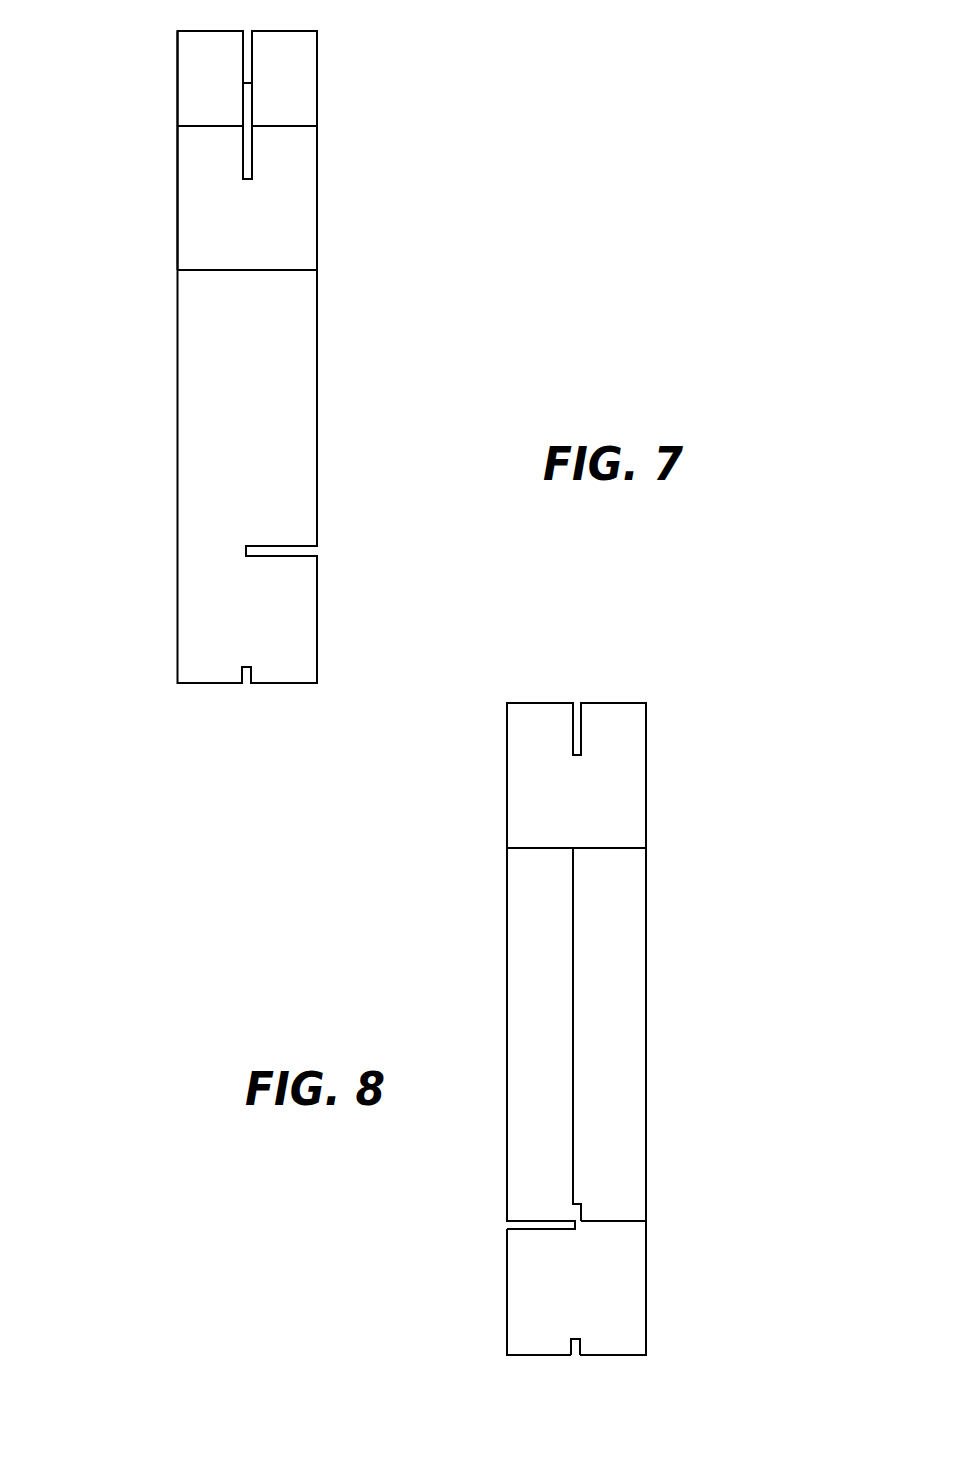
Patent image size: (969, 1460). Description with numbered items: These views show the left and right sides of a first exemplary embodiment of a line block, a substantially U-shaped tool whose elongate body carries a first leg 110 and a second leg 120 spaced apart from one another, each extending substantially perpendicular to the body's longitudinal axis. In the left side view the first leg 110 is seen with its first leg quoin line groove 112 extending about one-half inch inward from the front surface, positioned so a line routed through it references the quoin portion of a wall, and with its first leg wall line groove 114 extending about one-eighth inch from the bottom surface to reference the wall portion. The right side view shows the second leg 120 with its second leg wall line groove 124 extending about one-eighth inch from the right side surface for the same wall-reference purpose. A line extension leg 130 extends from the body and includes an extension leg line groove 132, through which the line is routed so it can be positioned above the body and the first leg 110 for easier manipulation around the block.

In FIG. 7, the first leg 110 is at (177, 430).
In FIG. 7, the first leg quoin line groove 112 is at (283, 545).
In FIG. 8, the first leg quoin line groove 112 is at (542, 1232).
In FIG. 7, the first leg wall line groove 114 is at (242, 685).
In FIG. 8, the first leg wall line groove 114 is at (583, 1337).
In FIG. 8, the second leg 120 is at (647, 948).
In FIG. 8, the second leg wall line groove 124 is at (581, 1005).
In FIG. 7, the line extension leg 130 is at (322, 164).
In FIG. 8, the line extension leg 130 is at (648, 755).
In FIG. 7, the extension leg line groove 132 is at (242, 97).
In FIG. 8, the extension leg line groove 132 is at (572, 735).